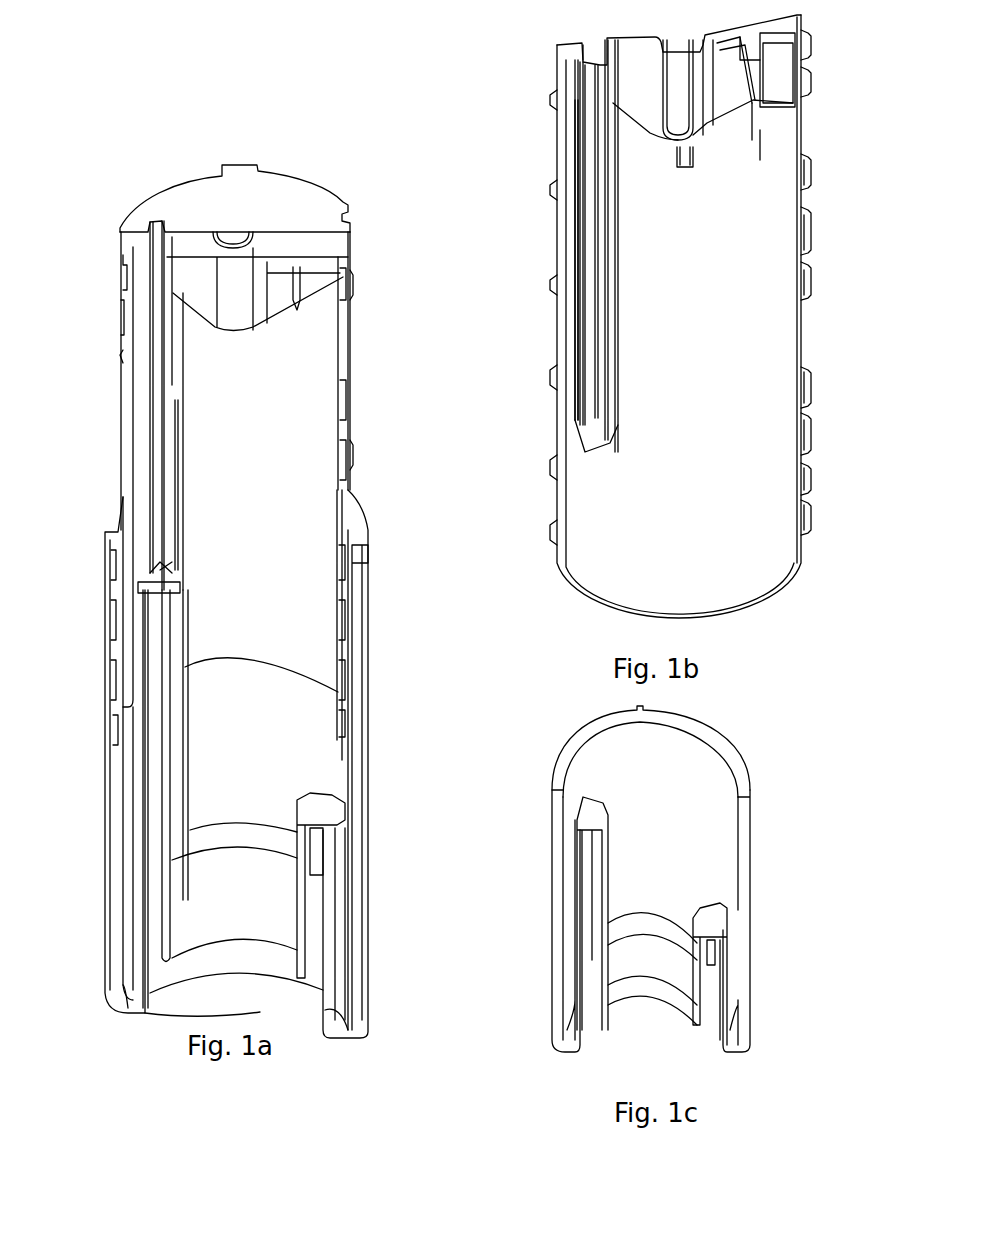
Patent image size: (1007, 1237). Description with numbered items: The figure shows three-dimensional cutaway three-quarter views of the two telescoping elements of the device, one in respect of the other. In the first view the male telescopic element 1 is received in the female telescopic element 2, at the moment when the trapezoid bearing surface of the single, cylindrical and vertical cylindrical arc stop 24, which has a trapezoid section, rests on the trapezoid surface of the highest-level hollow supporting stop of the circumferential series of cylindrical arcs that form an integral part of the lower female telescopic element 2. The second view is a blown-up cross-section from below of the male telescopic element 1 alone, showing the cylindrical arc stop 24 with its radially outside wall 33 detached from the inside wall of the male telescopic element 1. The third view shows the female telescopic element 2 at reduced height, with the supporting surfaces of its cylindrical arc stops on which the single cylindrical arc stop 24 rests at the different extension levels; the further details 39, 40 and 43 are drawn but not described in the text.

In FIG. 1A, the male telescopic element 1 is at (367, 363).
In FIG. 1B, the male telescopic element 1 is at (546, 257).
In FIG. 1A, the female telescopic element 2 is at (379, 705).
In FIG. 1C, the female telescopic element 2 is at (536, 792).
In FIG. 1A, the cylindrical arc stop 24 is at (199, 477).
In FIG. 1B, the cylindrical arc stop 24 is at (548, 355).
In FIG. 1B, the radially outside wall 33 is at (558, 146).
In FIG. 1A, the latching projection 39 is at (139, 592).
In FIG. 1C, the latching projection 39 is at (623, 795).
In FIG. 1A, the latching projection 40 is at (348, 822).
In FIG. 1C, the latching projection 40 is at (736, 912).
In FIG. 1A, the stop shoulder 43 is at (244, 840).
In FIG. 1C, the stop shoulder 43 is at (650, 932).